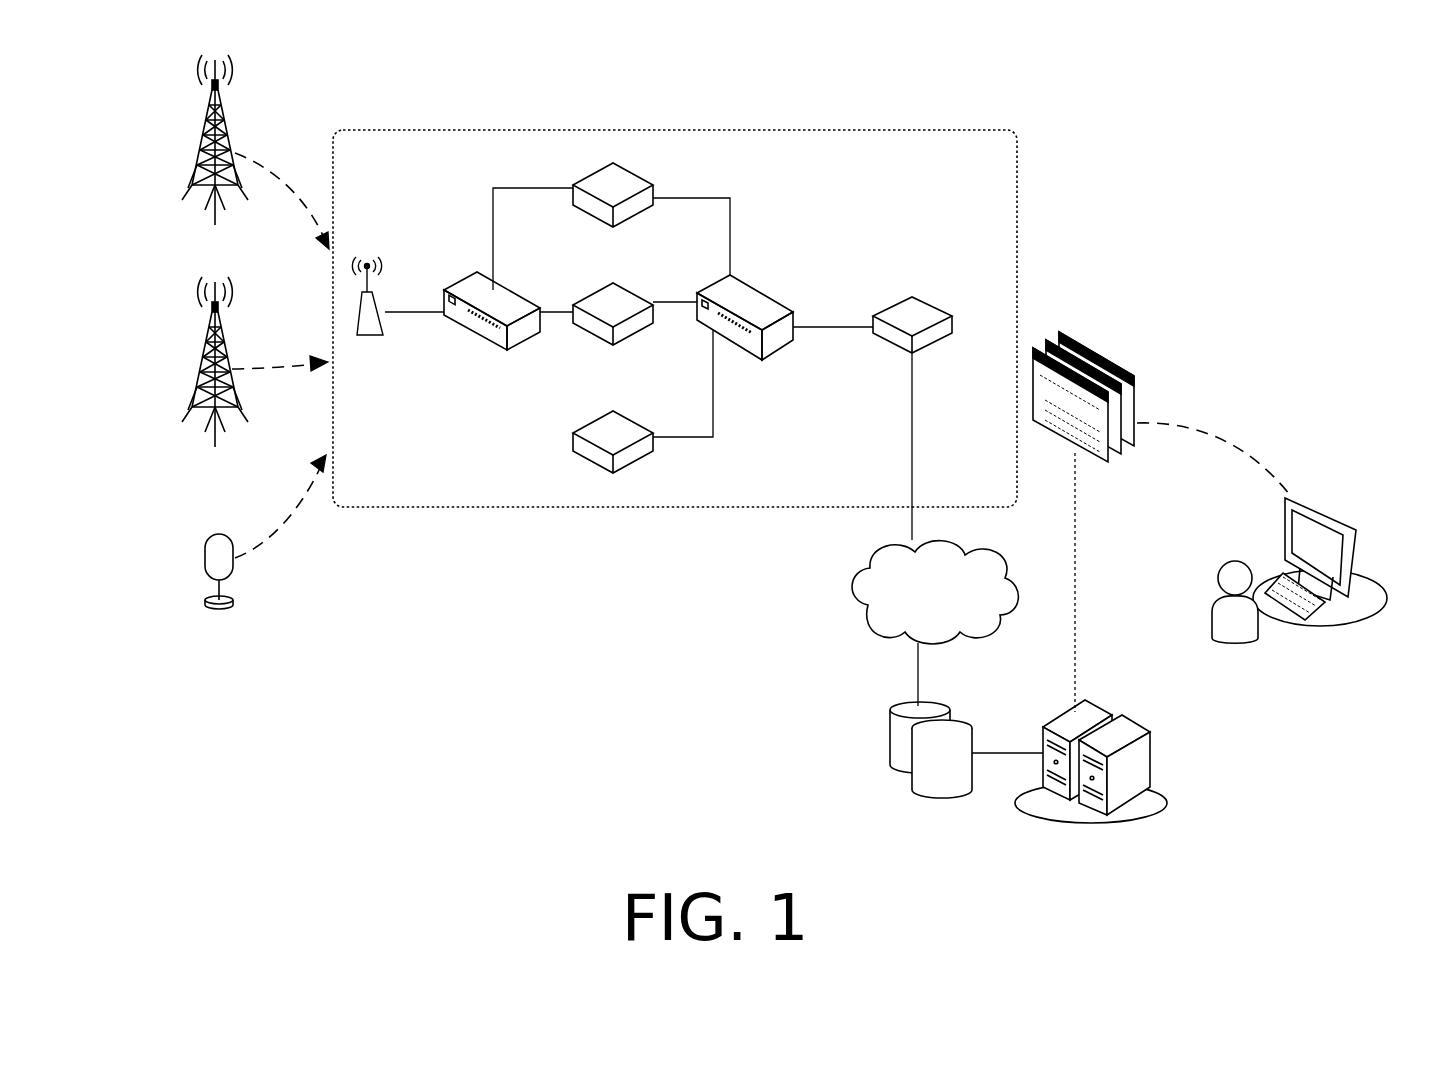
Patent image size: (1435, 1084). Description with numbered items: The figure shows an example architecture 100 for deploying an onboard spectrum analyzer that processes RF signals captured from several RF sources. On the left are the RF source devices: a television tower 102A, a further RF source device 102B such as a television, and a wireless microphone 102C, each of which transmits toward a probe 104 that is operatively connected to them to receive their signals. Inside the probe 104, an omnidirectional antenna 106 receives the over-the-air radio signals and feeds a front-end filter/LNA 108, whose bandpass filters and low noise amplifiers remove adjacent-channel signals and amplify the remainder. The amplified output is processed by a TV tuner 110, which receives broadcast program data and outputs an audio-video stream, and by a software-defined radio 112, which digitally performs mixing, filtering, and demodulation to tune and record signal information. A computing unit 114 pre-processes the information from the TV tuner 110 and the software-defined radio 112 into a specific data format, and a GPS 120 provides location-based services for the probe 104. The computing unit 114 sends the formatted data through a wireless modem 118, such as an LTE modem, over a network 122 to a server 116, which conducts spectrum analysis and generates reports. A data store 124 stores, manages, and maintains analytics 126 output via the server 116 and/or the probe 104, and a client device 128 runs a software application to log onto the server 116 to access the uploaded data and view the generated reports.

The architecture 100 is at (1333, 118).
The television tower 102A is at (205, 138).
The RF source device 102B is at (205, 358).
The wireless microphone 102C is at (205, 543).
The probe 104 is at (675, 318).
The antenna 106 is at (375, 335).
The filter/LNA 108 is at (477, 290).
The TV tuner 110 is at (640, 176).
The software-defined radio 112 is at (630, 290).
The computing unit 114 is at (760, 295).
The server 116 is at (1150, 735).
The wireless modem 118 is at (912, 297).
The global positioning system 120 is at (623, 418).
The network 122 is at (935, 592).
The data store 124 is at (972, 730).
The analytics 126 is at (1095, 352).
The client device 128 is at (1310, 500).